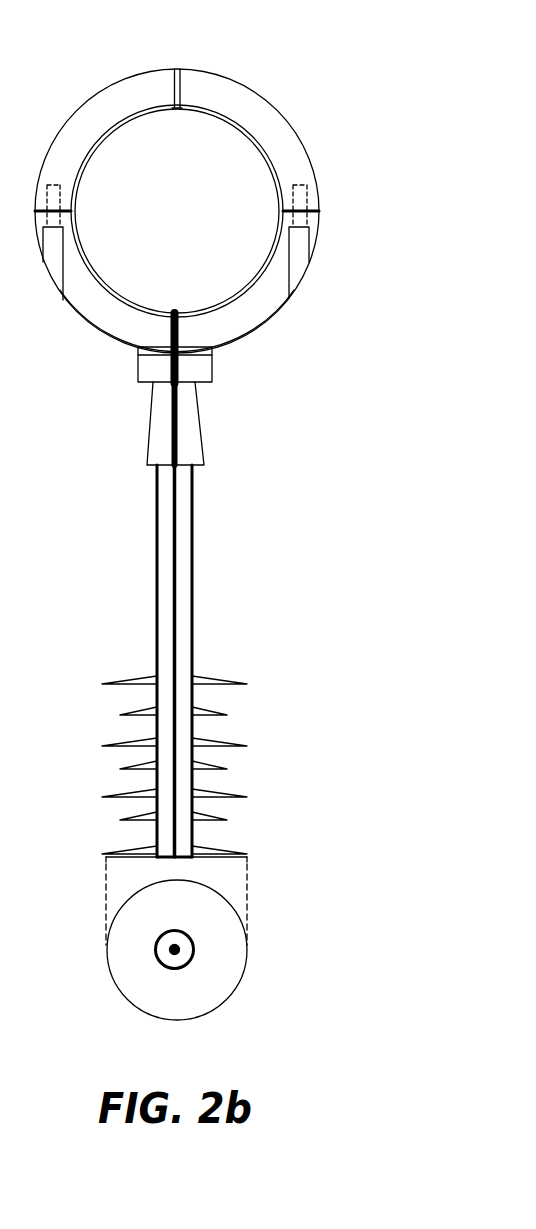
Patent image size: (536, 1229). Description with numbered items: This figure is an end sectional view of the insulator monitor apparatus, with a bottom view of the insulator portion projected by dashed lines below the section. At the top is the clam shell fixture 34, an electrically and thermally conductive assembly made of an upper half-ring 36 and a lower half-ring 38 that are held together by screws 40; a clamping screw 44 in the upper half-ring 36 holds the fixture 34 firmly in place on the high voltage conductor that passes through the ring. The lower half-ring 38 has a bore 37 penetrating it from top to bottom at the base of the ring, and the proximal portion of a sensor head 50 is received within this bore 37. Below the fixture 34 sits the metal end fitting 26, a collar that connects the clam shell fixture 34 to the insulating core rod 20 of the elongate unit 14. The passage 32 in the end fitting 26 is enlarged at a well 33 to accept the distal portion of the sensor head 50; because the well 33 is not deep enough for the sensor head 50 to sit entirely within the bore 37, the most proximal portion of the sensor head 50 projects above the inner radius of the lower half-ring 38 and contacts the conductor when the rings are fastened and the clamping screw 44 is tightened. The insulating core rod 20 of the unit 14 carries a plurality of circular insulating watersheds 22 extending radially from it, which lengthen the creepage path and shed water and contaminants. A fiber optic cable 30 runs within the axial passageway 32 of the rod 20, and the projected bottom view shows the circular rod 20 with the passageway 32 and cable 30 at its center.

The elongate unit 14 is at (208, 661).
The insulating core rod 20 is at (183, 962).
The insulating watersheds 22 is at (128, 900).
The metal end fitting 26 is at (200, 420).
The fiber optic cable 30 is at (183, 583).
The fiber optic cable passageway 32 is at (172, 532).
The well 33 is at (167, 371).
The clam shell fixture 34 is at (338, 176).
The upper half-ring 36 is at (90, 108).
The bore 37 is at (180, 328).
The lower half-ring 38 is at (230, 328).
The screws 40 is at (53, 238).
The clamping screw 44 is at (177, 68).
The sensor head 50 is at (170, 328).